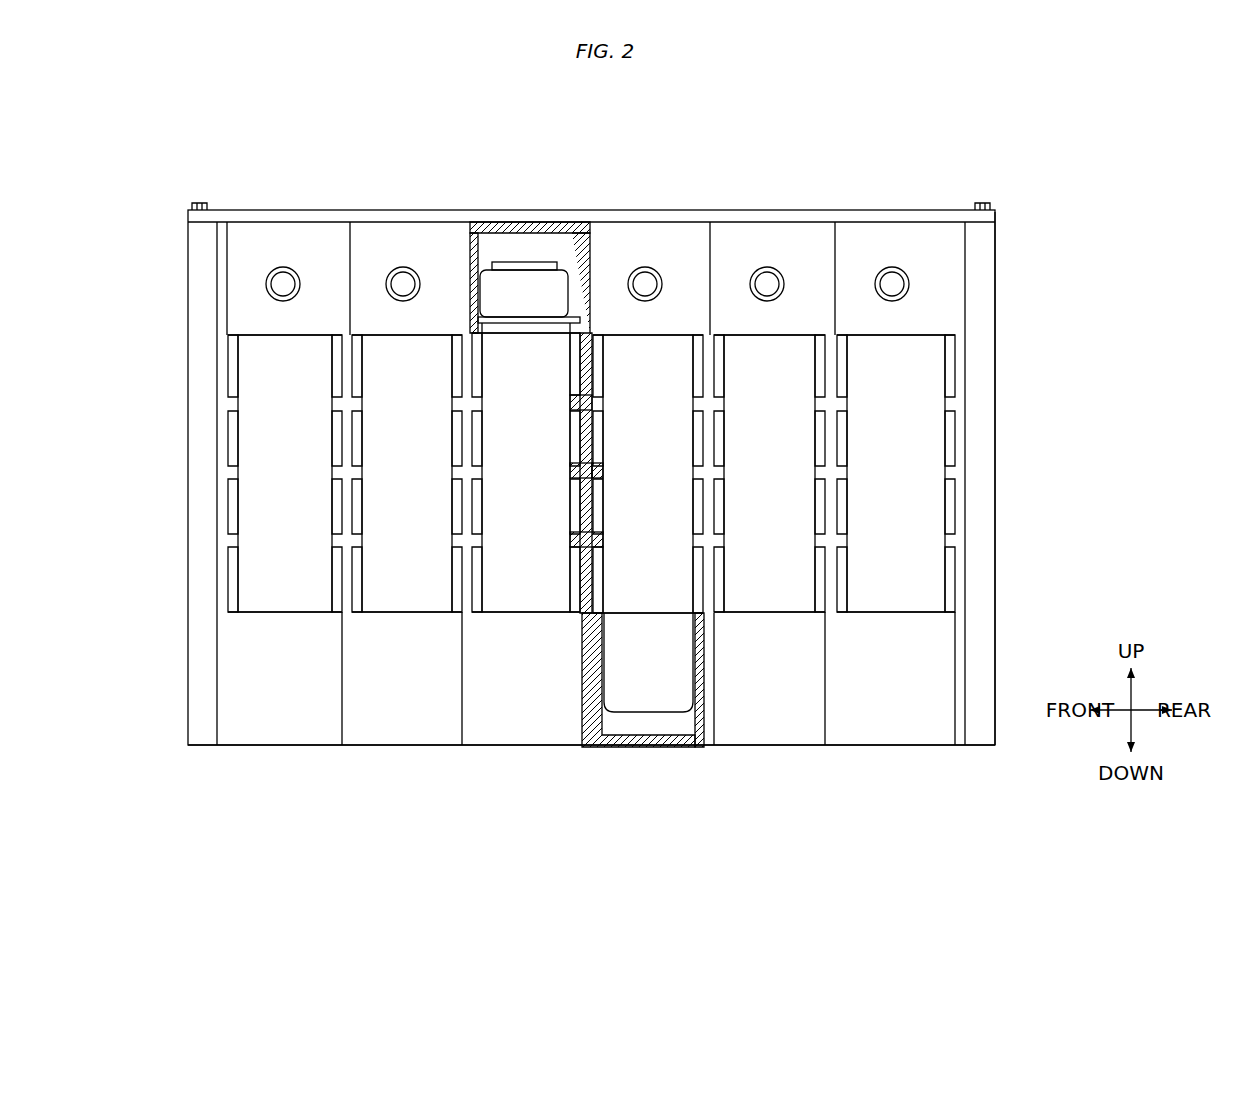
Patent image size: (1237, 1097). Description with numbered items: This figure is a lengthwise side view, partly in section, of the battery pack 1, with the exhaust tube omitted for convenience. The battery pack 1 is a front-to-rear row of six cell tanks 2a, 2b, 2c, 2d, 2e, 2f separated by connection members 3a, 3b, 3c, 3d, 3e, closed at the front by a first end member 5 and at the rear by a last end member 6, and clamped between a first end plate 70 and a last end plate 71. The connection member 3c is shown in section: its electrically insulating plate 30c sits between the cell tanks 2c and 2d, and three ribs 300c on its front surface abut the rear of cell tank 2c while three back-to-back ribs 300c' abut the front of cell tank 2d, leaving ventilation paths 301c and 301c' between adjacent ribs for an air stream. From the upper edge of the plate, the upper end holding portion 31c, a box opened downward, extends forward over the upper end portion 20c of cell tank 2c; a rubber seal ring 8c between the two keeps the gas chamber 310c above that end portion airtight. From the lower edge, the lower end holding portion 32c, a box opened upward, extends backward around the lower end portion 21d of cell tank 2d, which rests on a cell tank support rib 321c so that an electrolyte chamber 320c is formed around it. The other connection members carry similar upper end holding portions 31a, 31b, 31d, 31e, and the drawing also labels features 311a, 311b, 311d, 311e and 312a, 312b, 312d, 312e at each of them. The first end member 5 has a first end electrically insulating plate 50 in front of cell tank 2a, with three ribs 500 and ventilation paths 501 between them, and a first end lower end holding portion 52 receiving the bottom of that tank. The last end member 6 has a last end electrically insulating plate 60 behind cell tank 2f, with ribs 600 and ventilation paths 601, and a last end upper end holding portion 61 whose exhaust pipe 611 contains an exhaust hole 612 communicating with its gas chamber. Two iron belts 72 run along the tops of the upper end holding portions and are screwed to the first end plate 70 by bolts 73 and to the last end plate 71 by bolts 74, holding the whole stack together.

The battery pack 1 is at (386, 116).
The cell tank 2a is at (287, 585).
The cell tank 2b is at (410, 585).
The cell tank 2c is at (525, 585).
The cell tank 2d is at (647, 548).
The cell tank 2e is at (770, 585).
The cell tank 2f is at (888, 585).
The connection member 3a is at (244, 236).
The connection member 3b is at (365, 236).
The connection member 3c is at (527, 222).
The connection member 3d is at (600, 236).
The connection member 3e is at (722, 236).
The upper end holding portion 31a is at (328, 236).
The upper end holding portion 31b is at (441, 236).
The upper end holding portion 31c is at (545, 222).
The upper end holding portion 31d is at (683, 236).
The upper end holding portion 31e is at (804, 236).
The positioning hole 311a is at (297, 292).
The positioning hole 311b is at (417, 292).
The positioning hole 311d is at (660, 292).
The positioning hole 311e is at (783, 292).
The positioning boss 312a is at (282, 286).
The positioning boss 312b is at (402, 286).
The positioning boss 312d is at (644, 286).
The positioning boss 312e is at (766, 286).
The gas chamber 310c is at (477, 230).
The electrically insulating plate 30c is at (582, 417).
The rib 300c is at (549, 503).
The ventilation path 301c is at (537, 438).
The rib 300c' is at (637, 472).
The ventilation path 301c' is at (636, 438).
The lower end holding portion 32c is at (703, 672).
The electrolyte chamber 320c is at (613, 728).
The cell tank support rib 321c is at (654, 705).
The lower end portion 21d is at (639, 675).
The upper end portion 20c is at (538, 300).
The seal ring 8c is at (510, 327).
The first end member 5 is at (246, 730).
The first end electrically insulating plate 50 is at (224, 384).
The rib 500 is at (240, 471).
The ventilation path 501 is at (240, 516).
The first end lower end holding portion 52 is at (320, 720).
The last end member 6 is at (850, 236).
The last end electrically insulating plate 60 is at (958, 384).
The rib 600 is at (944, 471).
The ventilation path 601 is at (944, 516).
The last end upper end holding portion 61 is at (926, 236).
The exhaust pipe 611 is at (907, 292).
The exhaust hole 612 is at (891, 286).
The first end plate 70 is at (195, 292).
The last end plate 71 is at (990, 268).
The belt 72 is at (314, 216).
The bolt 73 is at (198, 205).
The bolt 74 is at (980, 205).